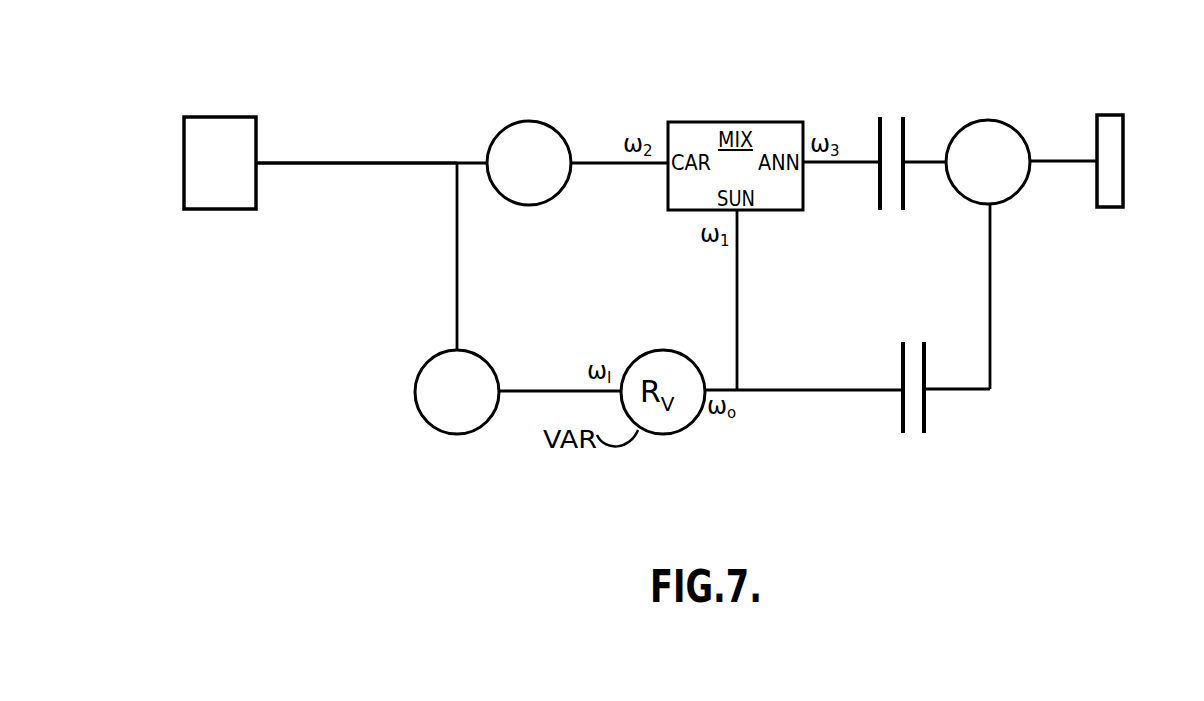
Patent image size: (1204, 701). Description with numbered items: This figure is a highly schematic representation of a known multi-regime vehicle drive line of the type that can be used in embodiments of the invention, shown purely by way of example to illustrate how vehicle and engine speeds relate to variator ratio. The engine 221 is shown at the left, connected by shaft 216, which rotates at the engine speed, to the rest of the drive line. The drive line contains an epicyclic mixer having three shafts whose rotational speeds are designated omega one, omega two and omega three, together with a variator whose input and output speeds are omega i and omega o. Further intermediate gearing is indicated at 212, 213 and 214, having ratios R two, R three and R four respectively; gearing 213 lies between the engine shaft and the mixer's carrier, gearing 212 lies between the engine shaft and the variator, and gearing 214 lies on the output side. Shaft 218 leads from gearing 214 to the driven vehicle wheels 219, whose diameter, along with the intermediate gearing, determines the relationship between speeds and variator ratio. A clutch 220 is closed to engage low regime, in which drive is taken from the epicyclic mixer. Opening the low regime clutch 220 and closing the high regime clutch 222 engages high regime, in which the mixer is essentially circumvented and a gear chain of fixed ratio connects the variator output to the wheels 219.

The gearing 212 is at (438, 432).
The gearing 213 is at (528, 120).
The gearing 214 is at (982, 118).
The shaft 216 is at (287, 163).
The shaft 218 is at (1055, 161).
The driven vehicle wheels 219 is at (1108, 115).
The clutch 220 is at (880, 192).
The engine 221 is at (213, 117).
The high regime clutch 222 is at (927, 417).